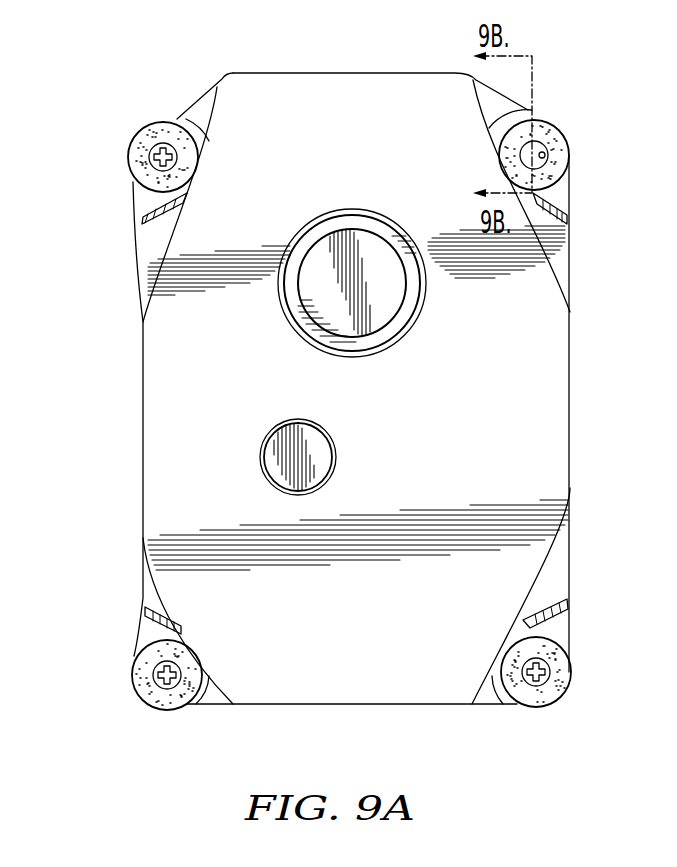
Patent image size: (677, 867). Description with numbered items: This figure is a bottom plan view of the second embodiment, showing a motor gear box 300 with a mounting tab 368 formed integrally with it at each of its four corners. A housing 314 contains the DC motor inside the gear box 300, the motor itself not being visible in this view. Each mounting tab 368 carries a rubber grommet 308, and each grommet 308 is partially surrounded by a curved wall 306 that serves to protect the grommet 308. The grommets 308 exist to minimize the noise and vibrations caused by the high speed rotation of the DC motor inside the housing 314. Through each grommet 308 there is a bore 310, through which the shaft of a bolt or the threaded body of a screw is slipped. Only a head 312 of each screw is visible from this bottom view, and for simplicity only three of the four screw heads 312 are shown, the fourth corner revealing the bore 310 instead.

The motor gear box 300 is at (132, 386).
The curved wall 306 is at (185, 120).
The rubber grommet 308 is at (140, 135).
The bore 310 is at (543, 155).
The head 312 is at (153, 158).
The housing 314 is at (565, 383).
The mounting tab 368 is at (150, 241).